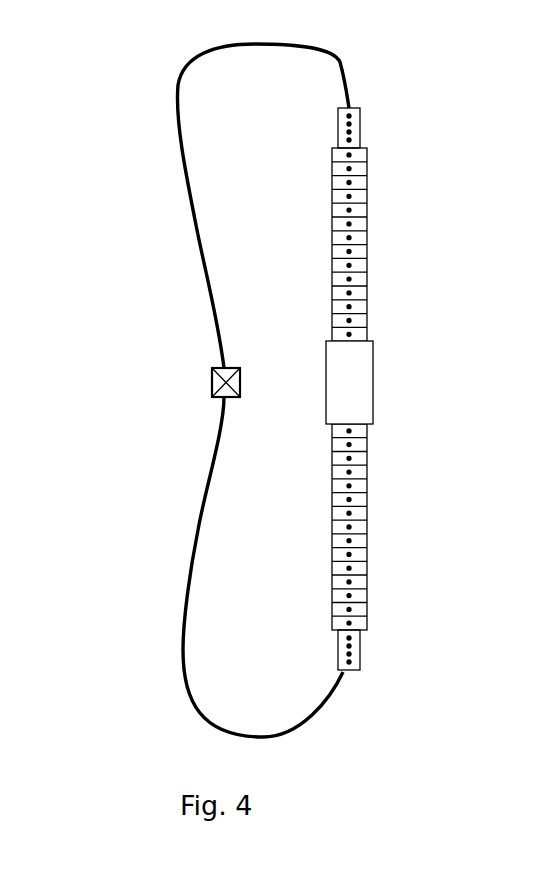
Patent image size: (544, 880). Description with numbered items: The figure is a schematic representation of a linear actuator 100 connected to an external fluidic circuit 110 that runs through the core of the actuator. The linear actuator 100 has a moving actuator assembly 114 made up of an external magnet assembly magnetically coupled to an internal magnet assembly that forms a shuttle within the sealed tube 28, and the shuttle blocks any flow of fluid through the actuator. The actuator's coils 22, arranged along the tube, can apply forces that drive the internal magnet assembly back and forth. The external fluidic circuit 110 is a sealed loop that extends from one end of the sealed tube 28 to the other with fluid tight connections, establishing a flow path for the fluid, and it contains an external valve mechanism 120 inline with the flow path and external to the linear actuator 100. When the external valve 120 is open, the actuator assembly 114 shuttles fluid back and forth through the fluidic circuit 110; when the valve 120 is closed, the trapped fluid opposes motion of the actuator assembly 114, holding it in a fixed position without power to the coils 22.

The linear actuator 100 is at (288, 376).
The external fluidic circuit 110 is at (346, 62).
The external valve mechanism 120 is at (213, 389).
The sealed tube 28 is at (360, 127).
The coils 22 is at (352, 195).
The moving actuator assembly 114 is at (373, 382).